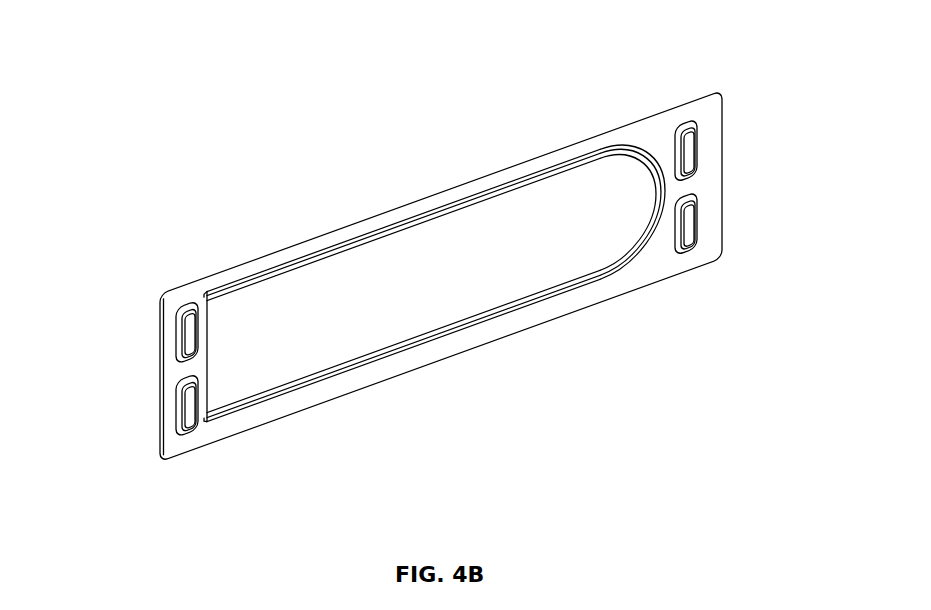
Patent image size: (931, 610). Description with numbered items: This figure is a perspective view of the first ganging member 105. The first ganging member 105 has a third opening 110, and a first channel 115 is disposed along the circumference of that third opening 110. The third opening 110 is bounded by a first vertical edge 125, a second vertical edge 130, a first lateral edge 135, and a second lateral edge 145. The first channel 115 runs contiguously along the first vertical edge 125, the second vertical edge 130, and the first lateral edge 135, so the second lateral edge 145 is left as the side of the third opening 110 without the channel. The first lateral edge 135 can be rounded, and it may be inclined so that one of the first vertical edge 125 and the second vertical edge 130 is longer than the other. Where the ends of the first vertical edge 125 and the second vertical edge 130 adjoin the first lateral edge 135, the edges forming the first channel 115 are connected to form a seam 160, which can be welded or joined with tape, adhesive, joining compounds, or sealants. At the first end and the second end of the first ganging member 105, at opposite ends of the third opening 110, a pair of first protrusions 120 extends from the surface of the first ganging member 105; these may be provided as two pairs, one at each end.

The first ganging member 105 is at (648, 120).
The third opening 110 is at (408, 260).
The first channel 115 is at (558, 296).
The pair of first protrusions 120 is at (177, 341).
The first vertical edge 125 is at (425, 207).
The second vertical edge 130 is at (372, 366).
The first lateral edge 135 is at (652, 245).
The second lateral edge 145 is at (206, 293).
The seam 160 is at (613, 142).